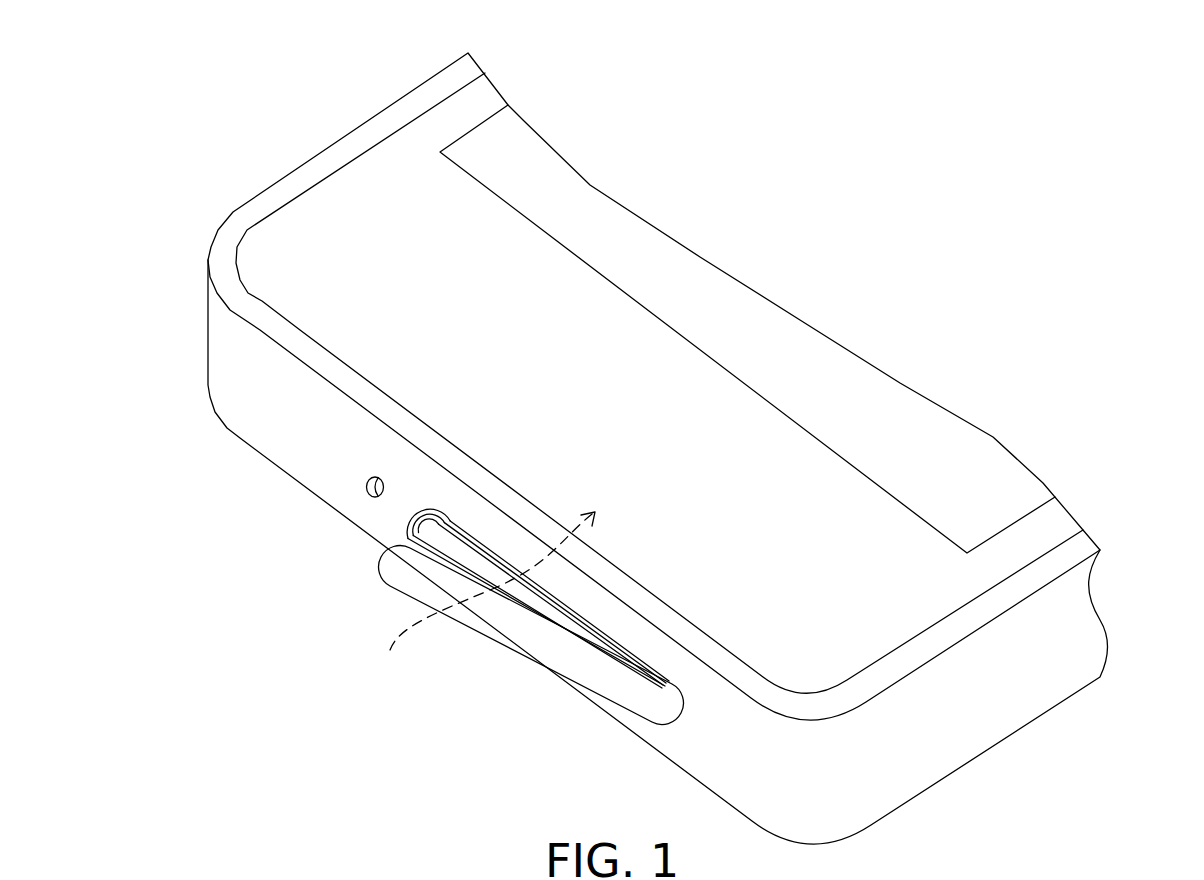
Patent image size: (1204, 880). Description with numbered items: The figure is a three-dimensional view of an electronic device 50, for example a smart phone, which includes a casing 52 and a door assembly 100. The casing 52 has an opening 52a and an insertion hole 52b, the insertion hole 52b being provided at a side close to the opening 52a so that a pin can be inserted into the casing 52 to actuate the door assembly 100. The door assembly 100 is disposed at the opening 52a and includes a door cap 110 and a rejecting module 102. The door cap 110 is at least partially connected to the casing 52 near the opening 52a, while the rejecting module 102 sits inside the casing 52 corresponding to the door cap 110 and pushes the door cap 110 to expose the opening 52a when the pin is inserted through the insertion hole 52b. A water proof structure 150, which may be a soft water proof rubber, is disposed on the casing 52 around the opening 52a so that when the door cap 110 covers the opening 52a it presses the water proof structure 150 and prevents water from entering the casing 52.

The electronic device 50 is at (1153, 782).
The casing 52 is at (978, 718).
The opening 52a is at (452, 527).
The insertion hole 52b is at (364, 489).
The door assembly 100 is at (465, 645).
The rejecting module 102 is at (481, 600).
The door cap 110 is at (510, 620).
The water proof structure 150 is at (393, 582).